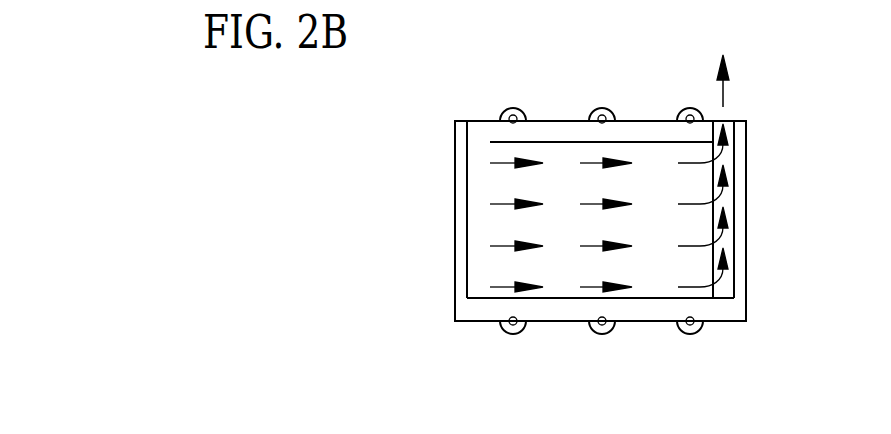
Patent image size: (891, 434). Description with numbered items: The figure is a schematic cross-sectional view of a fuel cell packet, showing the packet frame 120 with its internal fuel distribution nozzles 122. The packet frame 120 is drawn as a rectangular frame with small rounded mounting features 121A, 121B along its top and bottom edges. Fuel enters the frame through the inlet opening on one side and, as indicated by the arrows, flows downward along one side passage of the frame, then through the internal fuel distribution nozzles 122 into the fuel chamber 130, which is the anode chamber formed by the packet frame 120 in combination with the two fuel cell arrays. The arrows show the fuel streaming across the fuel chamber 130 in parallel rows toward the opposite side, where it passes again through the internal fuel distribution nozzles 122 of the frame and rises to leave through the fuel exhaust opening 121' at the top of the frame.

The packet frame 120 is at (645, 125).
The fuel exhaust opening 121' is at (750, 174).
The mounting lug 121A is at (517, 108).
The mounting lug 121B is at (619, 151).
The internal fuel distribution nozzle 122 is at (473, 212).
The fuel chamber 130 is at (655, 165).